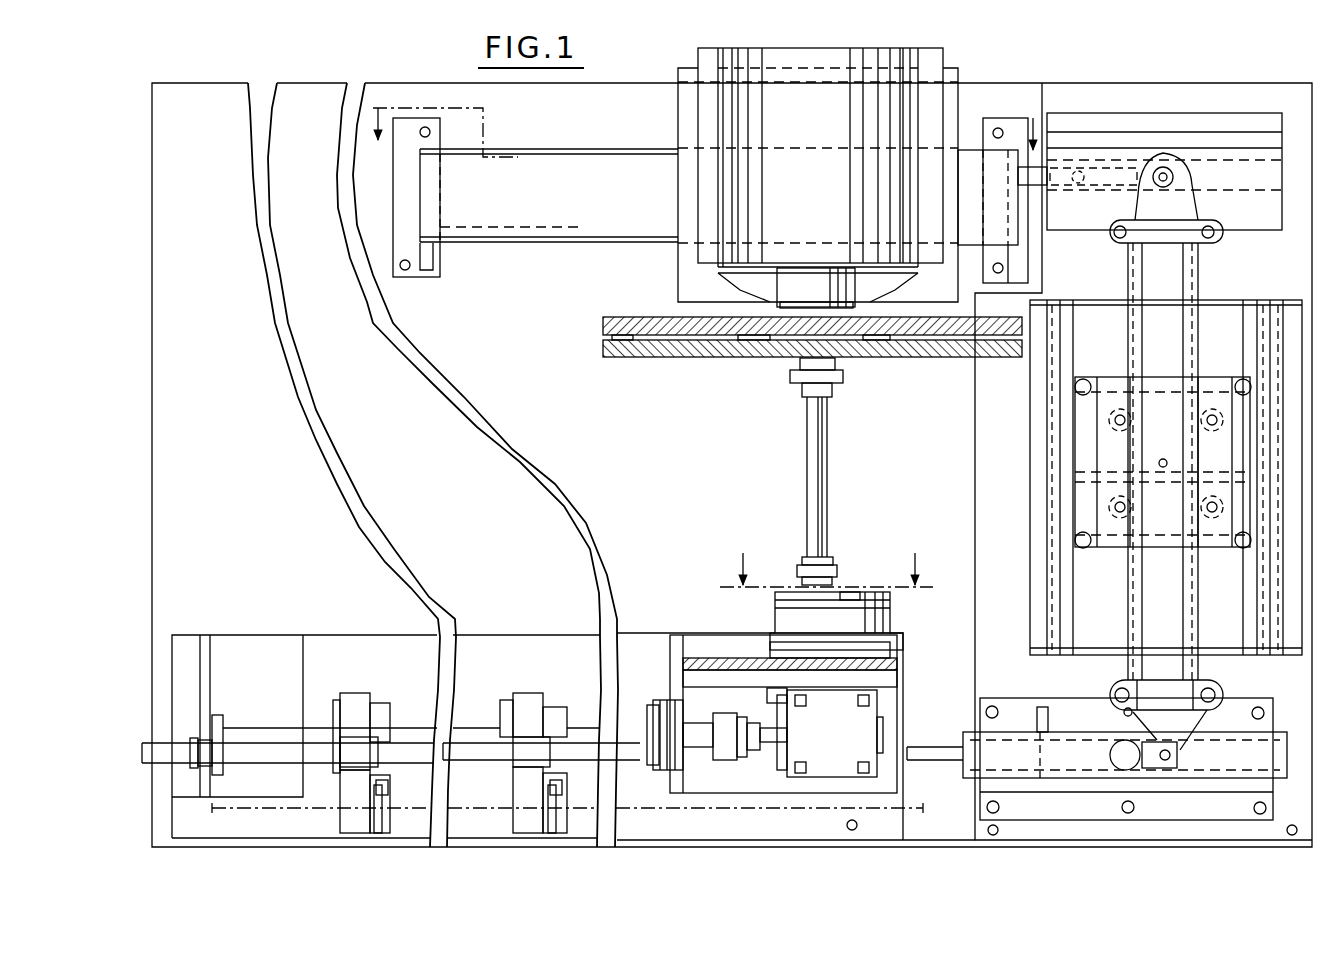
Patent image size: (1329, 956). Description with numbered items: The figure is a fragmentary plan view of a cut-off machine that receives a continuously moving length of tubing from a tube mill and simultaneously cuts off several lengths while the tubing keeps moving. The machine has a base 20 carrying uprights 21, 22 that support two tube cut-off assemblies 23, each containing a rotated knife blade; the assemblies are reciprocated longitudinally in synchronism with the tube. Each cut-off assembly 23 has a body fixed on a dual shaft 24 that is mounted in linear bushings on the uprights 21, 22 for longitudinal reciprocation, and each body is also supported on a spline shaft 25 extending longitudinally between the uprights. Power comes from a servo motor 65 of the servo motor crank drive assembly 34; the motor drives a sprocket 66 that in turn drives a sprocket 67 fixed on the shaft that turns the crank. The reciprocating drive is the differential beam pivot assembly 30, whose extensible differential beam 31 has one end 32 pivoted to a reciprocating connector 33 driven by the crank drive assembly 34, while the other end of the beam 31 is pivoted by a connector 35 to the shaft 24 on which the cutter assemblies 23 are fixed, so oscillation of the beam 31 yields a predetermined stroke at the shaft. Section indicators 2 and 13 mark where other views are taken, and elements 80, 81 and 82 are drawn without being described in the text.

The section line 2- 2 is at (702, 131).
The section line 13- 13 is at (828, 555).
The base 20 is at (262, 520).
The upright 21 is at (275, 645).
The upright 22 is at (713, 640).
The tube cut-off assembly 23 is at (358, 693).
The dual shaft 24 is at (625, 760).
The spline shaft 25 is at (258, 728).
The differential beam pivot assembly 30 is at (1017, 437).
The differential beam 31 is at (1205, 273).
The end of differential beam 32 is at (1167, 167).
The reciprocating connector 33 is at (1088, 203).
The servo motor crank drive assembly 34 is at (598, 143).
The connector 35 is at (1170, 767).
The servo motor 65 is at (788, 205).
The sprocket 66 is at (767, 358).
The sprocket 67 is at (658, 358).
The bearing block 80 is at (893, 620).
The vertical shaft 81 is at (827, 507).
The gearbox 82 is at (818, 745).